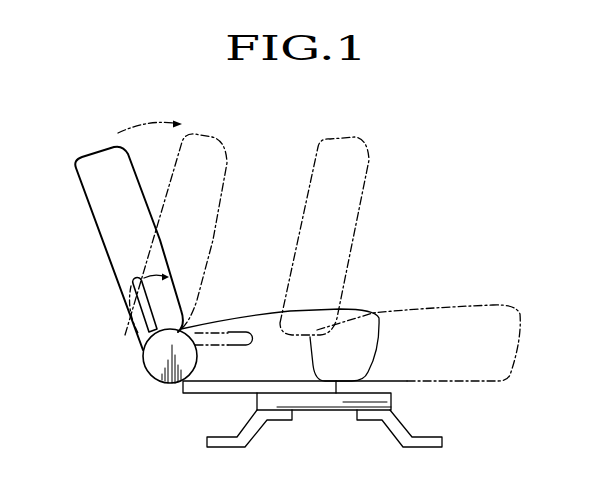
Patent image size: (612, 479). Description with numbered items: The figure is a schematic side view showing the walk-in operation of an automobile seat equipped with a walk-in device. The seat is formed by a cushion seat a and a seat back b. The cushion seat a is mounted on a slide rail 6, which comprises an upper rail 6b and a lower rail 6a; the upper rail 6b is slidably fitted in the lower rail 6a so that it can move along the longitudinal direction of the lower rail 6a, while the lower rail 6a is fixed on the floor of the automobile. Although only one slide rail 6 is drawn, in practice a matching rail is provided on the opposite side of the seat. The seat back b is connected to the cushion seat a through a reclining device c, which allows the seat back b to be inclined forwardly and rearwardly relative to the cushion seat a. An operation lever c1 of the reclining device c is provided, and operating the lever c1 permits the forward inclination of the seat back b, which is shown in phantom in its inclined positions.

The cushion seat a is at (372, 308).
The seat back b is at (77, 166).
The reclining device c is at (145, 367).
The operation lever c1 is at (133, 286).
The slide rail 6 is at (282, 414).
The lower rail 6a is at (256, 403).
The upper rail 6b is at (191, 393).